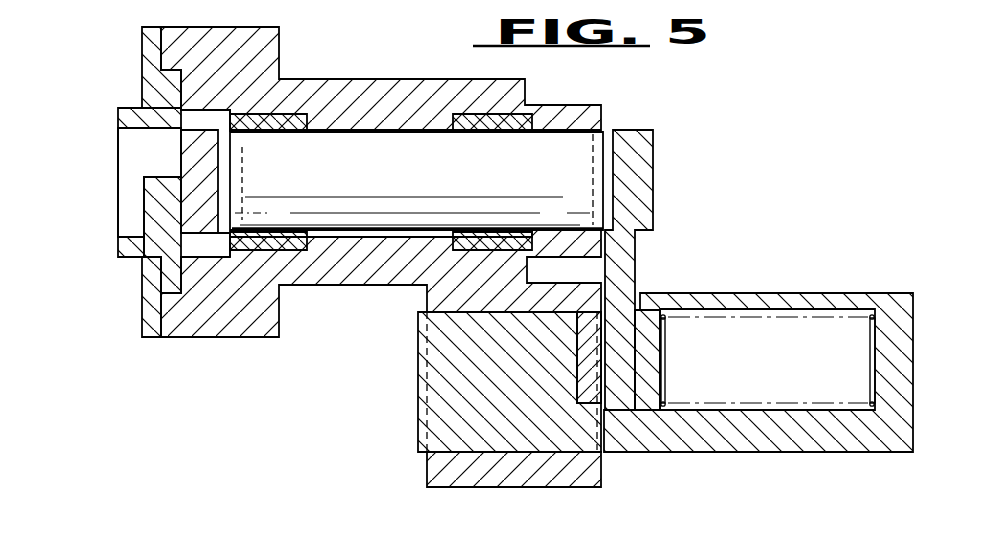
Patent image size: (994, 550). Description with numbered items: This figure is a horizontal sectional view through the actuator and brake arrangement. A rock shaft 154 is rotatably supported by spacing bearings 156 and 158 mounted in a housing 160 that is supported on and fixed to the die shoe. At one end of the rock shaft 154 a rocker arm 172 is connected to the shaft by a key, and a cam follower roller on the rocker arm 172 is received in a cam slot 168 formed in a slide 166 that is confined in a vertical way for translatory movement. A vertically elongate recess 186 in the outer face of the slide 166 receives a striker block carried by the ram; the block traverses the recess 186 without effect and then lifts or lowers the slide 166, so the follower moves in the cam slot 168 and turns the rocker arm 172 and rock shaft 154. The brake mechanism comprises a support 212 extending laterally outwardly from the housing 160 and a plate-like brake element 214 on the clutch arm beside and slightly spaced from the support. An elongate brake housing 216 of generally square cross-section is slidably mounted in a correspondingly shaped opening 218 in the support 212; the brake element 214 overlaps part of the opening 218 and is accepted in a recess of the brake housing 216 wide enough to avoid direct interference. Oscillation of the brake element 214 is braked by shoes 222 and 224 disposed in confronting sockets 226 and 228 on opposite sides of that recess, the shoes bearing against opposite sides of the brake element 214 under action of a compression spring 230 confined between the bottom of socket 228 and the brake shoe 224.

The rock shaft 154 is at (437, 173).
The spacing bearing 156 is at (283, 116).
The spacing bearing 158 is at (498, 113).
The housing 160 is at (397, 83).
The slide 166 is at (128, 245).
The cam slot 168 is at (162, 148).
The rocker arm 172 is at (205, 172).
The recess 186 is at (144, 197).
The support 212 is at (445, 470).
The brake element 214 is at (628, 248).
The brake housing 216 is at (787, 437).
The opening 218 is at (467, 312).
The brake shoe 222 is at (583, 385).
The brake shoe 224 is at (651, 365).
The socket 226 is at (588, 342).
The socket 228 is at (728, 320).
The compression spring 230 is at (827, 318).